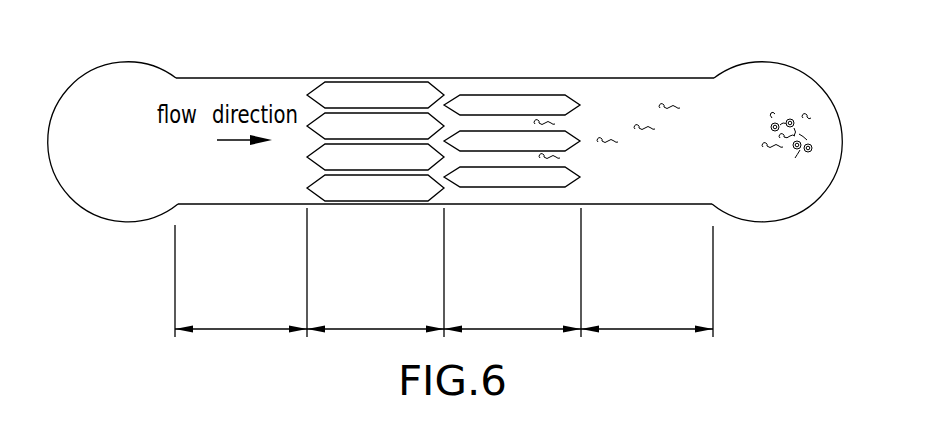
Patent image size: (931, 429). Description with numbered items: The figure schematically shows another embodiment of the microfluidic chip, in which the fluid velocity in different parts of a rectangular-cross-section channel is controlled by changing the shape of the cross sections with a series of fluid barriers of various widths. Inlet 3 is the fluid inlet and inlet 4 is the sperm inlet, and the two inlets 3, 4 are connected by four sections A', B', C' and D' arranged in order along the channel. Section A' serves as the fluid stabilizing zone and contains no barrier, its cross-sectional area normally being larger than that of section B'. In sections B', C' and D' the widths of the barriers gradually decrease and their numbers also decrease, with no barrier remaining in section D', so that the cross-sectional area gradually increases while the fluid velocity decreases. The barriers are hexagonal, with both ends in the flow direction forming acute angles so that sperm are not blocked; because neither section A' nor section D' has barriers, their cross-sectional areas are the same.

The inlet 3 is at (119, 214).
The inlet 4 is at (746, 218).
The section A' is at (241, 272).
The section B' is at (375, 209).
The section C' is at (512, 216).
The section D' is at (647, 220).